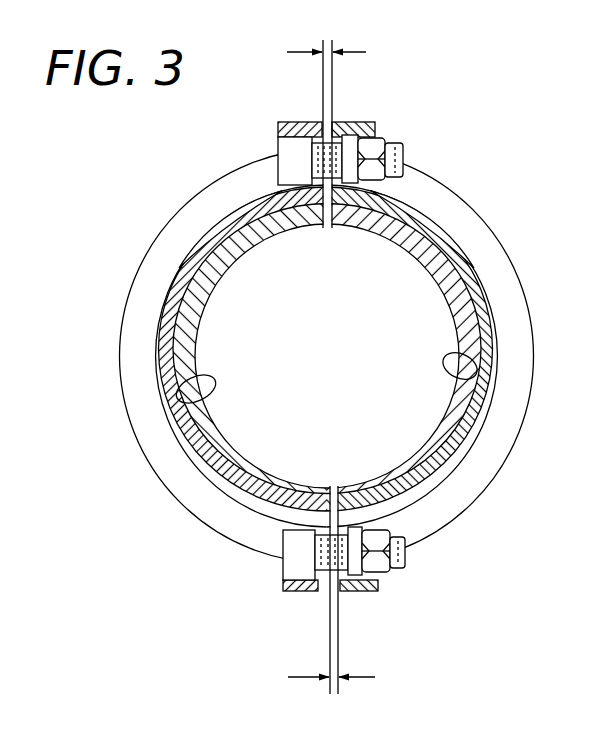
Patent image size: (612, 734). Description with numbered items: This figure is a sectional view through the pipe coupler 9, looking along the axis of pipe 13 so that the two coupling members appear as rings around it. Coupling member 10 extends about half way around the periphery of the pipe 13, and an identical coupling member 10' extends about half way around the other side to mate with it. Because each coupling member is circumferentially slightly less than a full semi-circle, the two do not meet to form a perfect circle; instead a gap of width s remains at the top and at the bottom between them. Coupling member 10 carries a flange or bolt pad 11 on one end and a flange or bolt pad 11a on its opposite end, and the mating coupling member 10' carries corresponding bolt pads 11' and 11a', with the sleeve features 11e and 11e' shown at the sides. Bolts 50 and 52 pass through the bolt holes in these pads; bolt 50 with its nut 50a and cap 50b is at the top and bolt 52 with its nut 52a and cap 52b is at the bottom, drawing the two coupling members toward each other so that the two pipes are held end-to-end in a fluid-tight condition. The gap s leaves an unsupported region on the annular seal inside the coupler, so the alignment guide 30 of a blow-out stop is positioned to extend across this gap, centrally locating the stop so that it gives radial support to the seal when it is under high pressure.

The clamp assembly 9 is at (546, 267).
The coupling member 10 is at (222, 356).
The coupling member 10' is at (453, 356).
The flange or bolt pad 11 is at (326, 286).
The upper right lug 11' is at (380, 101).
The flange or bolt pad 11a is at (282, 609).
The lower right lug 11a' is at (391, 609).
The sleeve pad end 11e is at (157, 424).
The sleeve pad end 11e' is at (521, 383).
The pipe 13 is at (390, 222).
The alignment guide 30 is at (468, 205).
The bolt 50 is at (276, 153).
The upper nut 50a is at (379, 144).
The upper nut cap 50b is at (404, 161).
The bolt 52 is at (297, 565).
The lower nut 52a is at (383, 568).
The lower nut cap 52b is at (406, 552).